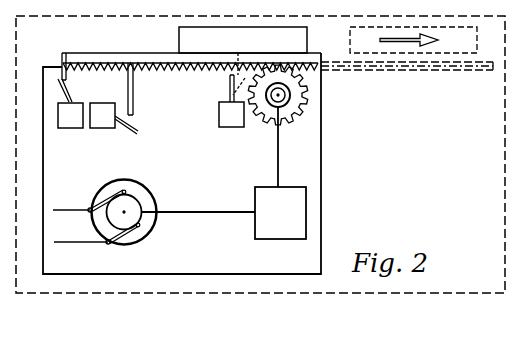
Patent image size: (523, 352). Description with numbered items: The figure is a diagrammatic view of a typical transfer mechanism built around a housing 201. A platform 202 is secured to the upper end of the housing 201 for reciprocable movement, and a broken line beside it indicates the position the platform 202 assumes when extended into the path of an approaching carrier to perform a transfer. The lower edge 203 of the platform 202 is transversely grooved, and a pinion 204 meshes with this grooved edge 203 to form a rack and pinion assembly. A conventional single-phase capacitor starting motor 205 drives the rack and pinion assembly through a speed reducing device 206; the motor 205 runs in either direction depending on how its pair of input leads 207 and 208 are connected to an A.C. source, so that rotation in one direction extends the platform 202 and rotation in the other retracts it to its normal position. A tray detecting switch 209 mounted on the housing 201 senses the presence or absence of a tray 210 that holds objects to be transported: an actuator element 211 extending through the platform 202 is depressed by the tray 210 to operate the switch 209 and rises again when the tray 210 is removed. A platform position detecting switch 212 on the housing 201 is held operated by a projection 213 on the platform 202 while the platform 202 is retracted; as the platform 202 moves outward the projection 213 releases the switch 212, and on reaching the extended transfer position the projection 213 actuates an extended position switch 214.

The housing 201 is at (321, 151).
The platform 202 is at (312, 53).
The lower edge 203 is at (172, 67).
The pinion 204 is at (306, 96).
The motor 205 is at (152, 233).
The speed reducing device 206 is at (285, 239).
The input lead 207 is at (84, 210).
The input lead 208 is at (90, 243).
The tray detecting switch 209 is at (91, 128).
The tray 210 is at (179, 38).
The actuator element 211 is at (133, 87).
The platform position detecting switch 212 is at (58, 120).
The projection 213 is at (66, 80).
The extended position switch 214 is at (232, 128).